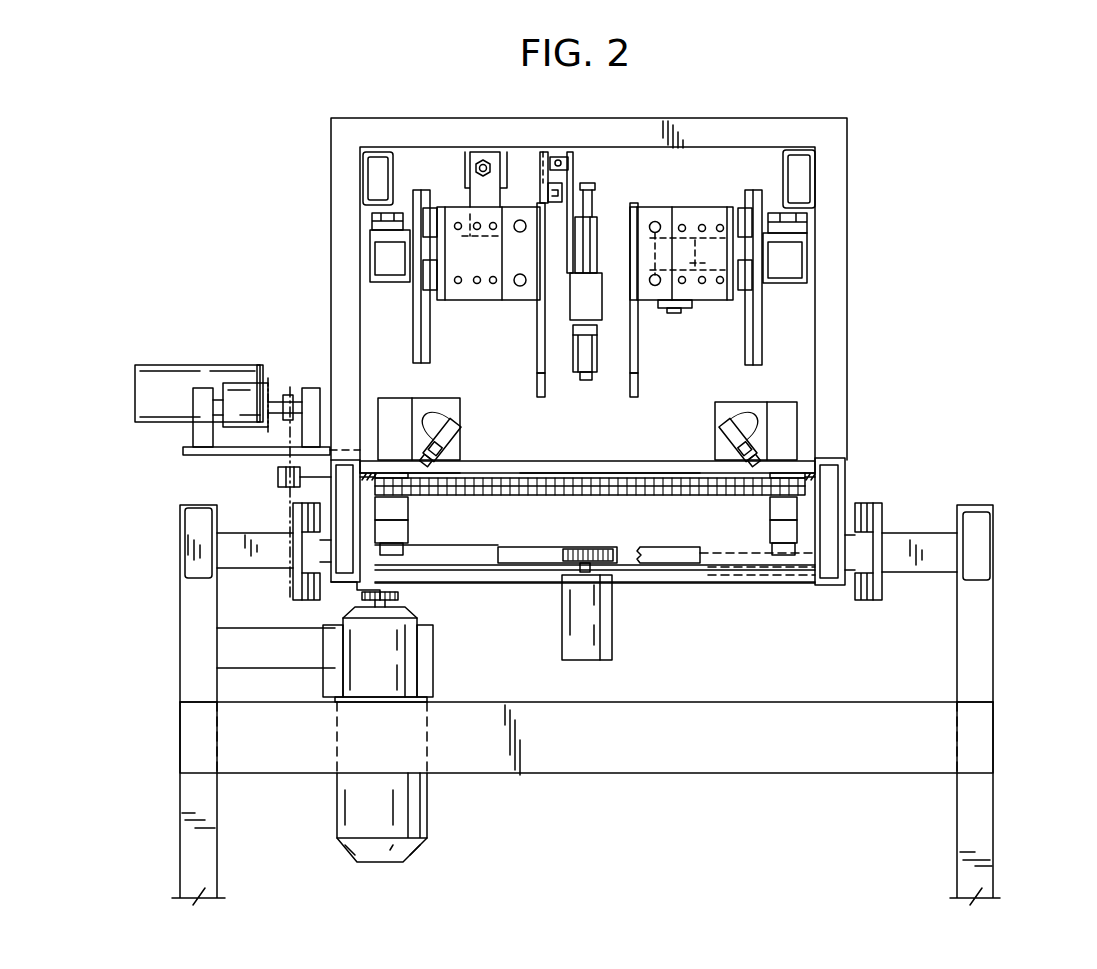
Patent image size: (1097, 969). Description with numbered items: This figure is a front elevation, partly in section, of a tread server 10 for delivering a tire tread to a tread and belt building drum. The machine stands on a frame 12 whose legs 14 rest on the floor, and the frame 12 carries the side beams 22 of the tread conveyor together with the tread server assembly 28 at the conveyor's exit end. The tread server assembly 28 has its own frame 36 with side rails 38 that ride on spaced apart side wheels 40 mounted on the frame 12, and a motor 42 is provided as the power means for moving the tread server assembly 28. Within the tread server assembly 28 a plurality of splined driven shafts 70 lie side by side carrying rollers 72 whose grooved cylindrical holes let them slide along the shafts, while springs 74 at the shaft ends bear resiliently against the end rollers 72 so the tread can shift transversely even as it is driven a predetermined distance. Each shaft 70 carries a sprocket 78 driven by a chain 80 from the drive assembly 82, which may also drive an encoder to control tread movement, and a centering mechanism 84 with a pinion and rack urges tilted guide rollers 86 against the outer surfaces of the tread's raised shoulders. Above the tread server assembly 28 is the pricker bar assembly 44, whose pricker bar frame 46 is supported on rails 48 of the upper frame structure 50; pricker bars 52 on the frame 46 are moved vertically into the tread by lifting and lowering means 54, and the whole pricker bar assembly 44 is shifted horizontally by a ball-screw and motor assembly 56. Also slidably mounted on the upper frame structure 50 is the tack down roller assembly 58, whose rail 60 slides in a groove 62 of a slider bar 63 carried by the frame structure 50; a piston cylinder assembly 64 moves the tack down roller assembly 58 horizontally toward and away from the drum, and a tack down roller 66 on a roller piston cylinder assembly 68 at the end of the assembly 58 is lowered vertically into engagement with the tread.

The tread server 10 is at (985, 230).
The frame 12 is at (178, 870).
The legs 14 is at (182, 799).
The side beams 22 is at (345, 578).
The tread server assembly 28 is at (717, 503).
The frame 36 is at (818, 586).
The side rails 38 is at (813, 482).
The side wheels 40 is at (302, 532).
The motor 42 is at (407, 823).
The pricker bar assembly 44 is at (713, 300).
The pricker bar frame 46 is at (373, 259).
The rails 48 is at (378, 221).
The upper frame structure 50 is at (838, 173).
The pricker bars 52 is at (537, 356).
The lifting and lowering means 54 is at (800, 258).
The ball-screw and motor assembly 56 is at (462, 165).
The tack down roller assembly 58 is at (585, 210).
The rail 60 is at (548, 190).
The groove 62 is at (553, 203).
The slider bar 63 is at (585, 160).
The piston cylinder assembly 64 is at (556, 155).
The tack down roller 66 is at (585, 380).
The roller piston cylinder assembly 68 is at (595, 305).
The splined driven shafts 70 is at (312, 483).
The rollers 72 is at (530, 490).
The springs 74 is at (848, 476).
The sprocket 78 is at (278, 478).
The chain 80 is at (287, 434).
The drive assembly 82 is at (150, 365).
The centering mechanism 84 is at (625, 593).
The tilted guide rollers 86 is at (448, 450).